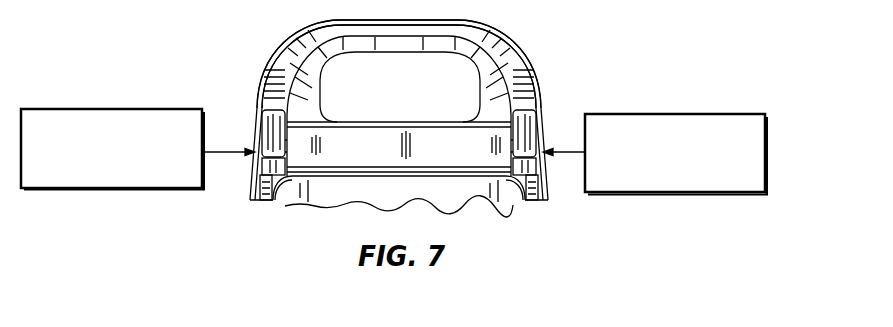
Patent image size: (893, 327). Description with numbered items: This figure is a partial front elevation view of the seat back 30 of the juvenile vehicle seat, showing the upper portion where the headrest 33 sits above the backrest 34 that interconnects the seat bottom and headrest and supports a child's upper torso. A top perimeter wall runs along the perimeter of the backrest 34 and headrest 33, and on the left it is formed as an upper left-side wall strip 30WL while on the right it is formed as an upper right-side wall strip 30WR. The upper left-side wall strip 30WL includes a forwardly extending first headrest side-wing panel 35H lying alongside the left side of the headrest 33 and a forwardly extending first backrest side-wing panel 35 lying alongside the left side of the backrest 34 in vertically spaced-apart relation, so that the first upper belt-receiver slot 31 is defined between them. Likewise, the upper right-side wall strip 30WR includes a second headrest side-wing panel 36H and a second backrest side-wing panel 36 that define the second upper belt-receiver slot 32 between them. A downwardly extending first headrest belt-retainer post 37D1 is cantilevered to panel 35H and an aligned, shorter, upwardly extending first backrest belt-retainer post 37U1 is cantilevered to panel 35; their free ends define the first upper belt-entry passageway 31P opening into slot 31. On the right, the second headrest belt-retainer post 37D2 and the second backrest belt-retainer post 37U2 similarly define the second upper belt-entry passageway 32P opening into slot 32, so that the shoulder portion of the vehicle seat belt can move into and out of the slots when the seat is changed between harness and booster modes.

The seat back 30 is at (272, 202).
The upper left-side wall strip 30WL is at (258, 66).
The upper right-side wall strip 30WR is at (549, 90).
The first upper belt-receiver slot 31 is at (114, 108).
The second upper belt-receiver slot 32 is at (650, 114).
The first upper belt-entry passageway 31P is at (296, 147).
The second upper belt-entry passageway 32P is at (502, 147).
The headrest 33 is at (280, 57).
The backrest 34 is at (418, 190).
The first backrest side-wing panel 35 is at (250, 190).
The second backrest side-wing panel 36 is at (544, 184).
The first headrest side-wing panel 35H is at (312, 54).
The second headrest side-wing panel 36H is at (498, 42).
The first headrest belt-retainer post 37D1 is at (270, 117).
The second headrest belt-retainer post 37D2 is at (530, 132).
The first backrest belt-retainer post 37U1 is at (288, 177).
The second backrest belt-retainer post 37U2 is at (520, 182).